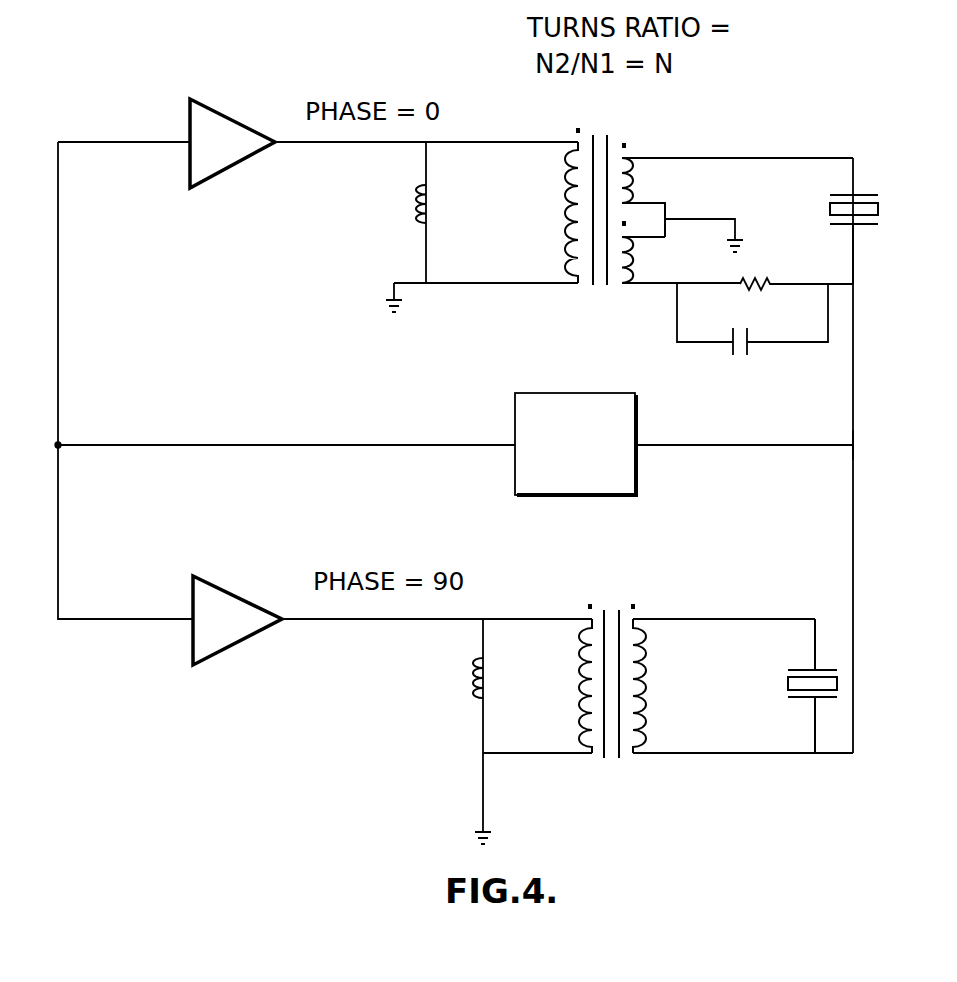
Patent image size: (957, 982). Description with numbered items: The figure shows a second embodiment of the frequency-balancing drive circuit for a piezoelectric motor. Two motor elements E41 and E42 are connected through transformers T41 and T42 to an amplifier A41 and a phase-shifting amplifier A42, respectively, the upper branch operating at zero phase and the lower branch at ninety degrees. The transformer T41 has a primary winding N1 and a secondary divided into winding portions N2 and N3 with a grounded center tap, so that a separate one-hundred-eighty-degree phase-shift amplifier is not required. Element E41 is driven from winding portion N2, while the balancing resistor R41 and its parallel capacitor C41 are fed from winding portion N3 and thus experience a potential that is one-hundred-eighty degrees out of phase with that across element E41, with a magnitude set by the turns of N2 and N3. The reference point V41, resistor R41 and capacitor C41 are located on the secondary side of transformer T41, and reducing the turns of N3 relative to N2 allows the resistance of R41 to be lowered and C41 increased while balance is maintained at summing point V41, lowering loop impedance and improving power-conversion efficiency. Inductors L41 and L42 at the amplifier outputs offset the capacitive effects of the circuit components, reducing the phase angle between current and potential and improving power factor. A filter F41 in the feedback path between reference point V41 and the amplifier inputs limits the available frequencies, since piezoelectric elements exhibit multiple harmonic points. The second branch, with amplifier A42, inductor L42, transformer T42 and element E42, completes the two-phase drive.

The amplifier A41 is at (255, 133).
The inductor L41 is at (412, 222).
The primary winding N1 is at (540, 212).
The transformer T41 is at (678, 194).
The transformer winding portion N2 is at (737, 197).
The transformer winding portion N3 is at (682, 251).
The piezoelectric motor element E41 is at (872, 194).
The balancing resistor R41 is at (771, 290).
The capacitor C41 is at (750, 356).
The filter F41 is at (573, 393).
The reference point V41 is at (853, 430).
The phase-shifting amplifier A42 is at (262, 609).
The inductor L42 is at (471, 658).
The transformer T42 is at (619, 605).
The piezoelectric motor element E42 is at (790, 668).